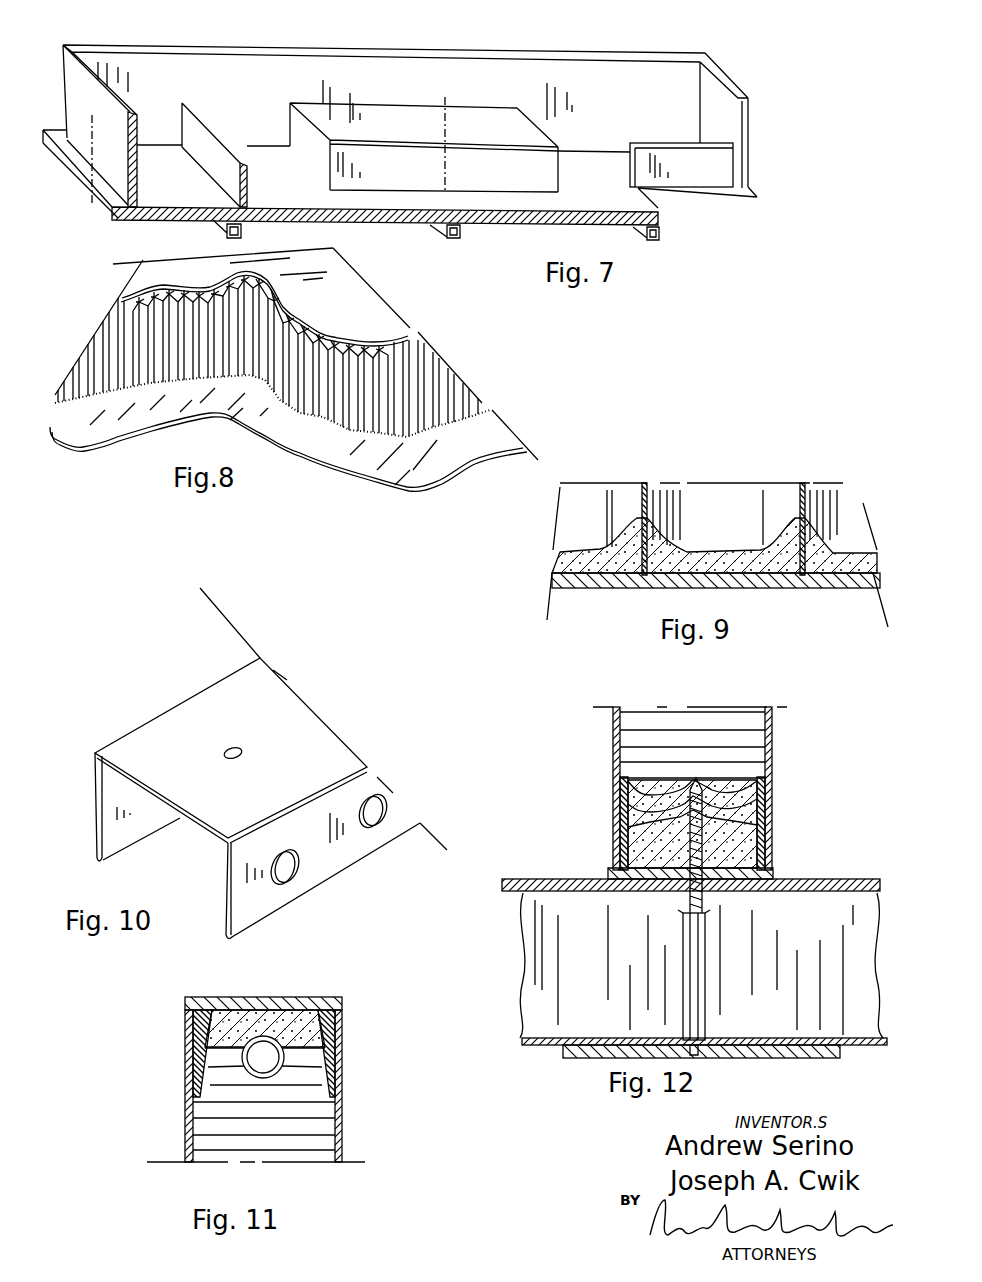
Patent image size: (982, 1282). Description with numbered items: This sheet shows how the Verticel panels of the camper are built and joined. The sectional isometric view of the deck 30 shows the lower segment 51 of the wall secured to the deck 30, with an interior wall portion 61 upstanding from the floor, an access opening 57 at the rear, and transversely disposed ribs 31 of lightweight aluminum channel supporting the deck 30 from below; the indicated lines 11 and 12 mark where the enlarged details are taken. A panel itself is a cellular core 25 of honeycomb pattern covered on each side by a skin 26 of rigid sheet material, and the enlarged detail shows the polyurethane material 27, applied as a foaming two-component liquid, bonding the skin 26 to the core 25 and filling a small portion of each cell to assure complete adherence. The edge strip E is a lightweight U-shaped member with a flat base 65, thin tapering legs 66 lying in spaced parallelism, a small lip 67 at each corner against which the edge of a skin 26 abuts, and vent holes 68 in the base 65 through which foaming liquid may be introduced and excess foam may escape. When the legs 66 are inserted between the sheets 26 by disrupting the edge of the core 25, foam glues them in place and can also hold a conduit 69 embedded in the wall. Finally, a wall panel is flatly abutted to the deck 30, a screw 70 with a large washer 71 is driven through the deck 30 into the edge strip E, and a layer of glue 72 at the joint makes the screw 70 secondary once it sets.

In FIG. 7, the section line 11— 11 is at (453, 172).
In FIG. 7, the section line 12— 12 is at (98, 219).
In FIG. 8, the cellular core 25 is at (438, 380).
In FIG. 9, the cellular core 25 is at (712, 502).
In FIG. 11, the cellular core 25 is at (273, 1150).
In FIG. 12, the cellular core 25 is at (542, 955).
In FIG. 8, the skin 26 is at (492, 437).
In FIG. 9, the skin 26 is at (607, 583).
In FIG. 11, the skin 26 is at (342, 1120).
In FIG. 12, the skin 26 is at (540, 1043).
In FIG. 9, the polyurethane material 27 is at (552, 562).
In FIG. 7, the deck 30 is at (382, 215).
In FIG. 7, the ribs 31 is at (658, 235).
In FIG. 7, the lower segment 51 is at (628, 77).
In FIG. 7, the access opening 57 is at (702, 220).
In FIG. 7, the interior wall portion 61 is at (198, 113).
In FIG. 10, the flat base 65 is at (317, 738).
In FIG. 12, the flat base 65 is at (757, 842).
In FIG. 10, the legs 66 is at (388, 820).
In FIG. 11, the legs 66 is at (338, 1030).
In FIG. 12, the legs 66 is at (768, 798).
In FIG. 10, the lip 67 is at (365, 770).
In FIG. 12, the lip 67 is at (770, 875).
In FIG. 10, the vent holes 68 is at (297, 870).
In FIG. 11, the vent holes 68 is at (263, 1007).
In FIG. 11, the conduit 69 is at (277, 1057).
In FIG. 12, the screw 70 is at (698, 975).
In FIG. 12, the washer 71 is at (772, 1055).
In FIG. 12, the glue 72 is at (607, 873).
In FIG. 10, the edge strip E is at (140, 717).
In FIG. 11, the edge strip E is at (320, 1007).
In FIG. 12, the edge strip E is at (663, 870).